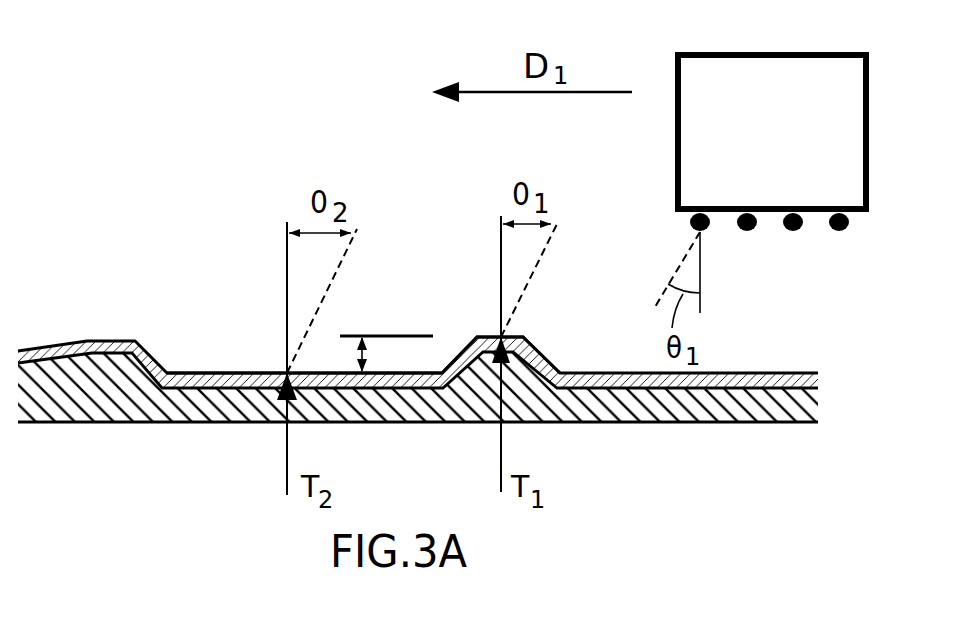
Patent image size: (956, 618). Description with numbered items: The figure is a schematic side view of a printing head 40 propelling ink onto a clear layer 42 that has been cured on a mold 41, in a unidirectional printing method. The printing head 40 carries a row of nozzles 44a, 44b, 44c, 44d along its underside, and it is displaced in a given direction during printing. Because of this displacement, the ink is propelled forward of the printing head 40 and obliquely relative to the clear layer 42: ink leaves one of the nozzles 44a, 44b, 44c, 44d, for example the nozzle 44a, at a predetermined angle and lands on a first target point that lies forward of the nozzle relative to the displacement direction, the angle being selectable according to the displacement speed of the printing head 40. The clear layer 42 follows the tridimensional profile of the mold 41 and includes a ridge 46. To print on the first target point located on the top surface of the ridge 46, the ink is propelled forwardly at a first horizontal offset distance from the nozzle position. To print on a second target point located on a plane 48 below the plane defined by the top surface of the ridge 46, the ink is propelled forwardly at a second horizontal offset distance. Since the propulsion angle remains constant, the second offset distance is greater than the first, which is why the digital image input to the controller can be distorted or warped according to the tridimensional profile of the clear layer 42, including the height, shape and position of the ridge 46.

The printing head 40 is at (815, 52).
The mold 41 is at (593, 410).
The clear layer 42 is at (693, 383).
The nozzle 44a is at (703, 233).
The nozzle 44b is at (749, 233).
The nozzle 44c is at (795, 233).
The nozzle 44d is at (841, 233).
The ridge 46 is at (469, 330).
The plane 48 is at (223, 365).